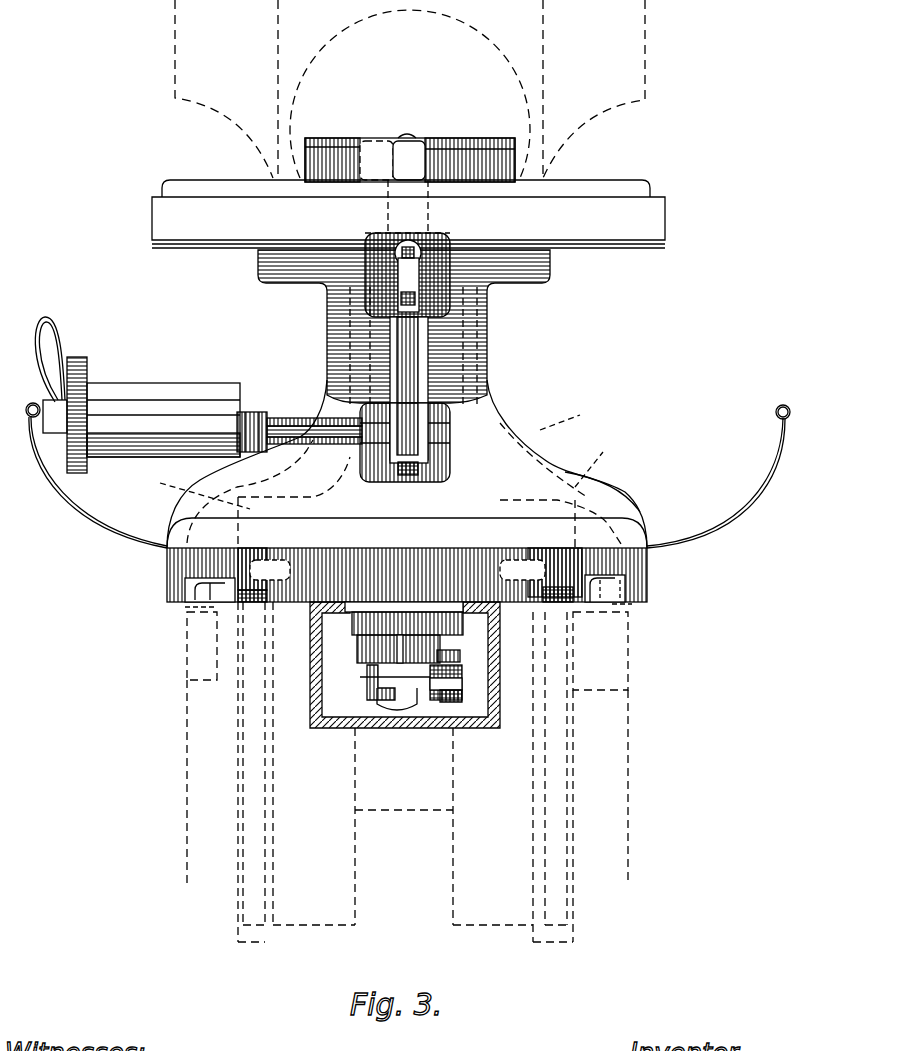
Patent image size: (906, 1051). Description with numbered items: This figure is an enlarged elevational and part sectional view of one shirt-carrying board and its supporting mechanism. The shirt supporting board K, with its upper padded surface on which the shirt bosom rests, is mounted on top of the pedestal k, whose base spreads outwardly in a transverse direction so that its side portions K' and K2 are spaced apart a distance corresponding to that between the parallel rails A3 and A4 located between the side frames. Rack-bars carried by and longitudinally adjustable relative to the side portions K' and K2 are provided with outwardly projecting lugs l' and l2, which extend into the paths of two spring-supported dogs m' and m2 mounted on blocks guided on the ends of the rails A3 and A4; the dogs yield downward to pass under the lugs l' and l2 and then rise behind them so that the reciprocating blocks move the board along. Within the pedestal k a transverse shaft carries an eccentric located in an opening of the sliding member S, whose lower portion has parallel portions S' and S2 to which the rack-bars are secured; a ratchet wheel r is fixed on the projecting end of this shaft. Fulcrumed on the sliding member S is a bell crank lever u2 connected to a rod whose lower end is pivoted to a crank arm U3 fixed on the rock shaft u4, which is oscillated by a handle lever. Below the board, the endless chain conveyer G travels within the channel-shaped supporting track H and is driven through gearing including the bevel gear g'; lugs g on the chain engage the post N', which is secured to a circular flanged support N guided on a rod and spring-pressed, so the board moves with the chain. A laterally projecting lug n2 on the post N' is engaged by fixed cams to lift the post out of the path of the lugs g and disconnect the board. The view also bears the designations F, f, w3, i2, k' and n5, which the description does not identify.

The frame F is at (535, 52).
The circular frame portion f is at (466, 54).
The shirt supporting board K is at (440, 209).
The pedestal k is at (407, 399).
The sliding member S is at (405, 443).
The parallel portion of sliding member S' is at (181, 487).
The parallel portion of sliding member S2 is at (604, 459).
The crank arm U3 is at (575, 414).
The side portion of pedestal base K2 is at (622, 492).
The bell crank lever u2 is at (390, 273).
The rod w3 is at (403, 363).
The rock shaft u4 is at (293, 427).
The ratchet wheel r is at (87, 373).
The side portion of pedestal base K' is at (375, 575).
The lug l' is at (277, 575).
The lug l2 is at (527, 568).
The recess i2 is at (628, 582).
The spring-supported dog m' is at (189, 611).
The spring-supported dog m2 is at (615, 606).
The channel-shaped supporting track H is at (500, 690).
The plate k' is at (404, 592).
The circular flanged support N is at (373, 648).
The post N' is at (383, 660).
The bevel gear g' is at (458, 644).
The endless chain conveyer G is at (462, 676).
The laterally projecting lug n2 is at (380, 665).
The spring n5 is at (372, 706).
The lug on chain g is at (423, 723).
The parallel rail A4 is at (225, 650).
The parallel rail A3 is at (592, 657).